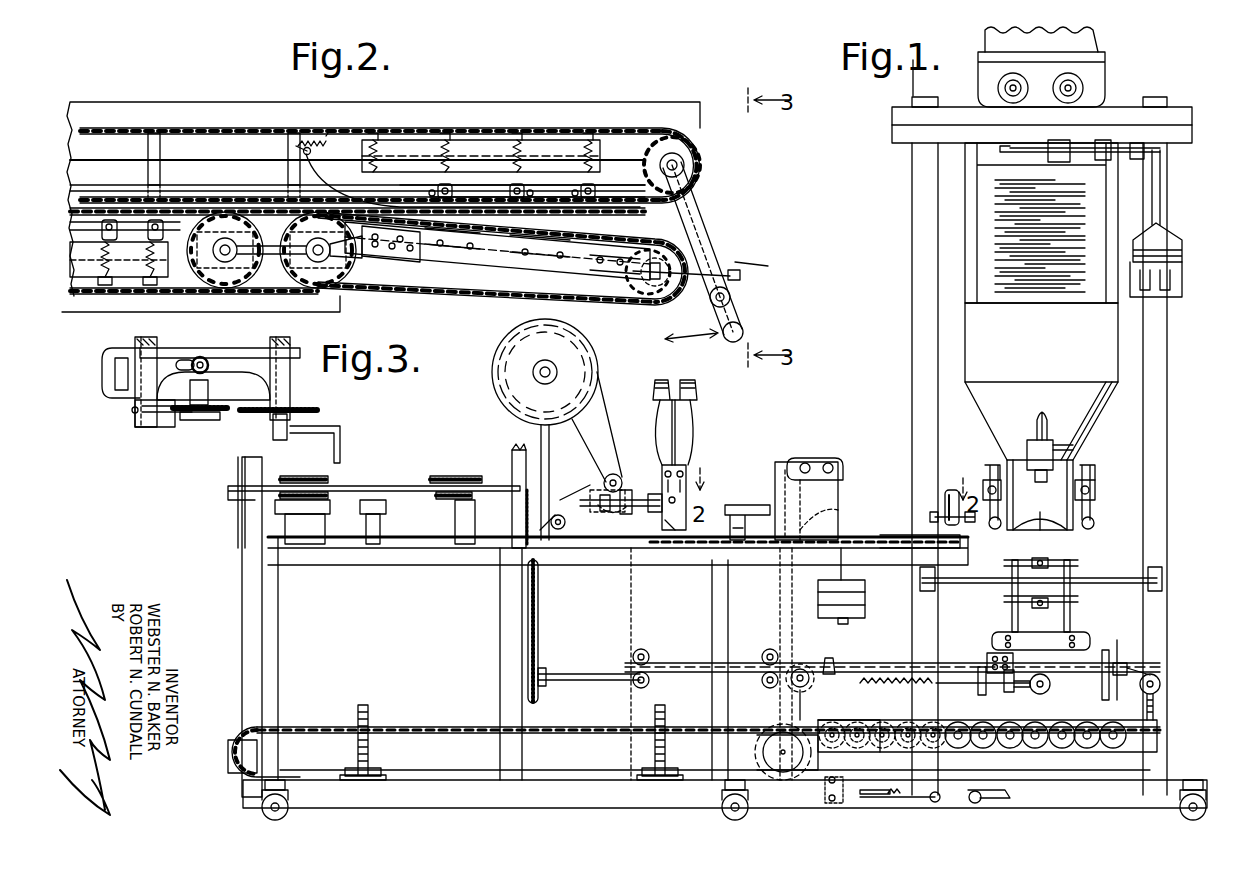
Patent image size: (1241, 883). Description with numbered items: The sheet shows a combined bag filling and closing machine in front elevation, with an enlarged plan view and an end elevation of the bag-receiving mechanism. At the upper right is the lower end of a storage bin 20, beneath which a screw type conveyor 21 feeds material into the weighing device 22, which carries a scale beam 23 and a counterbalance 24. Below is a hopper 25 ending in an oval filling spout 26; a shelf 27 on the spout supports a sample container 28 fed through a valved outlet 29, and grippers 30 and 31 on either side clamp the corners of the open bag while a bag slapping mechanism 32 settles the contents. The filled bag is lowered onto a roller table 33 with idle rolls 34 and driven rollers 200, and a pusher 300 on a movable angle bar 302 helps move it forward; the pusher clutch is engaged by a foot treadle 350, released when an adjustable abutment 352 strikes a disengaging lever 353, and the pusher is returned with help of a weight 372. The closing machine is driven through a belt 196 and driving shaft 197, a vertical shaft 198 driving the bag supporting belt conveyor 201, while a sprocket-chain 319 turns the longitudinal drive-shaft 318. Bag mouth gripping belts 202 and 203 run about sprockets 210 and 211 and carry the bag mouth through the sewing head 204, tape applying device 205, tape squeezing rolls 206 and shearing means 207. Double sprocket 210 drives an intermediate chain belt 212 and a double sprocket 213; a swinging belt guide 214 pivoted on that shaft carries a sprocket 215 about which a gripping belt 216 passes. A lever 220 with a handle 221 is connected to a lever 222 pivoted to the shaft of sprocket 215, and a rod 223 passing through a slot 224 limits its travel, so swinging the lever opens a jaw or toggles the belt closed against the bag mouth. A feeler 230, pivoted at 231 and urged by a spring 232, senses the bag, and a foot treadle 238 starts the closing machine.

In FIG. 1, the storage bin 20 is at (1103, 30).
In FIG. 1, the screw type conveyor 21 is at (1108, 82).
In FIG. 1, the weighing device 22 is at (1041, 223).
In FIG. 1, the scale beam 23 is at (1118, 148).
In FIG. 1, the counterbalance 24 is at (1176, 240).
In FIG. 1, the hopper 25 is at (1041, 381).
In FIG. 1, the filling spout 26 is at (1040, 495).
In FIG. 1, the shelf 27 is at (1063, 470).
In FIG. 1, the sample container 28 is at (1027, 448).
In FIG. 1, the valved outlet 29 is at (1048, 430).
In FIG. 1, the gripper 30 is at (998, 529).
In FIG. 1, the gripper 31 is at (1096, 516).
In FIG. 1, the bag slapping mechanism 32 is at (1078, 627).
In FIG. 1, the roller table 33 is at (1150, 728).
In FIG. 1, the idle rolls 34 is at (1025, 746).
In FIG. 1, the belt 196 is at (512, 459).
In FIG. 1, the driving shaft 197 is at (566, 530).
In FIG. 1, the vertical shaft 198 is at (240, 627).
In FIG. 1, the rollers 200 is at (868, 724).
In FIG. 1, the bag supporting belt conveyor 201 is at (560, 726).
In FIG. 2, the bag mouth gripping belt 202 is at (134, 292).
In FIG. 1, the bag mouth gripping belt 202 is at (643, 541).
In FIG. 2, the bag mouth gripping belt 203 is at (156, 136).
In FIG. 1, the sewing head 204 is at (681, 541).
In FIG. 1, the tape applying device 205 is at (582, 489).
In FIG. 1, the tape squeezing rolls 206 is at (436, 467).
In FIG. 1, the shearing means 207 is at (373, 476).
In FIG. 2, the double sprocket 210 is at (230, 286).
In FIG. 2, the sprocket 211 is at (702, 163).
In FIG. 3, the sprocket 211 is at (320, 412).
In FIG. 2, the intermediate chain belt 212 is at (285, 290).
In FIG. 1, the intermediate chain belt 212 is at (756, 541).
In FIG. 2, the double sprocket 213 is at (348, 262).
In FIG. 2, the swinging belt guide 214 is at (453, 265).
In FIG. 2, the sprocket 215 is at (664, 300).
In FIG. 3, the sprocket 215 is at (218, 421).
In FIG. 2, the gripping belt 216 is at (456, 299).
In FIG. 1, the gripping belt 216 is at (876, 544).
In FIG. 2, the lever 220 is at (706, 241).
In FIG. 3, the lever 220 is at (246, 348).
In FIG. 2, the handle 221 is at (744, 333).
In FIG. 3, the handle 221 is at (106, 380).
In FIG. 1, the handle 221 is at (945, 503).
In FIG. 2, the lever 222 is at (709, 304).
In FIG. 3, the lever 222 is at (170, 422).
In FIG. 2, the rod 223 is at (740, 272).
In FIG. 3, the rod 223 is at (210, 365).
In FIG. 1, the rod 223 is at (971, 524).
In FIG. 3, the slot 224 is at (186, 360).
In FIG. 2, the feeler 230 is at (318, 168).
In FIG. 2, the pivot 231 is at (311, 150).
In FIG. 2, the spring 232 is at (312, 140).
In FIG. 1, the foot treadle 238 is at (853, 806).
In FIG. 1, the pusher 300 is at (1105, 652).
In FIG. 1, the movable angle bar 302 is at (680, 666).
In FIG. 1, the longitudinal drive-shaft 318 is at (566, 675).
In FIG. 1, the sprocket-chain 319 is at (540, 608).
In FIG. 1, the foot treadle 350 is at (1008, 800).
In FIG. 1, the adjustable abutment 352 is at (982, 646).
In FIG. 1, the disengaging lever 353 is at (832, 660).
In FIG. 1, the weight 372 is at (866, 598).